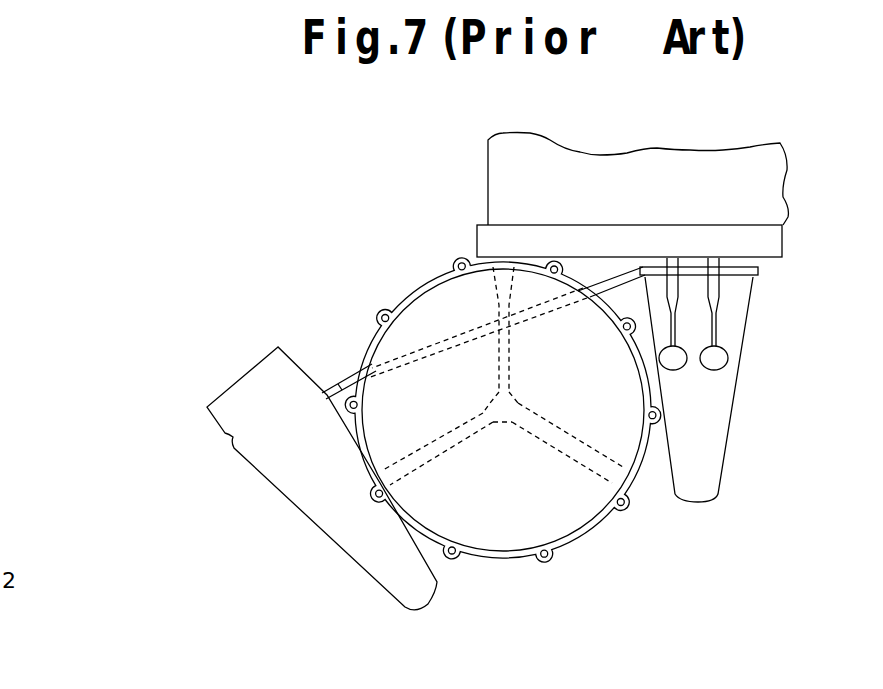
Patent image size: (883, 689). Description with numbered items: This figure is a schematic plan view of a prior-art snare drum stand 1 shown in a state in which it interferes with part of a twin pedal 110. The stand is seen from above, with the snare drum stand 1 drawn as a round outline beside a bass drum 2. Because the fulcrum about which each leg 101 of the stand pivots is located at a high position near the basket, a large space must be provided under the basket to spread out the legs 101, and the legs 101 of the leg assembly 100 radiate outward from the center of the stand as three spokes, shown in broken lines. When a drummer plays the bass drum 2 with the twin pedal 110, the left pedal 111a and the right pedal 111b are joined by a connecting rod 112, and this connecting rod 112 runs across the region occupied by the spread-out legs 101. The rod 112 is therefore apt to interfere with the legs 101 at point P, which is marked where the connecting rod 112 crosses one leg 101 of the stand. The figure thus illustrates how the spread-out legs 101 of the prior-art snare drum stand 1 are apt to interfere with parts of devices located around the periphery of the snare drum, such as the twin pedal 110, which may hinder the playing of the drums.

The housing/flange ring 1 is at (503, 556).
The bass drum 2 is at (488, 170).
The spoke-shaped groove pattern 100 is at (503, 386).
The leg 101 is at (510, 360).
The twin pedal 110 is at (732, 380).
The left pedal 111a is at (258, 482).
The right pedal 111b is at (730, 450).
The connecting rod 112 is at (611, 273).
The point P is at (505, 318).